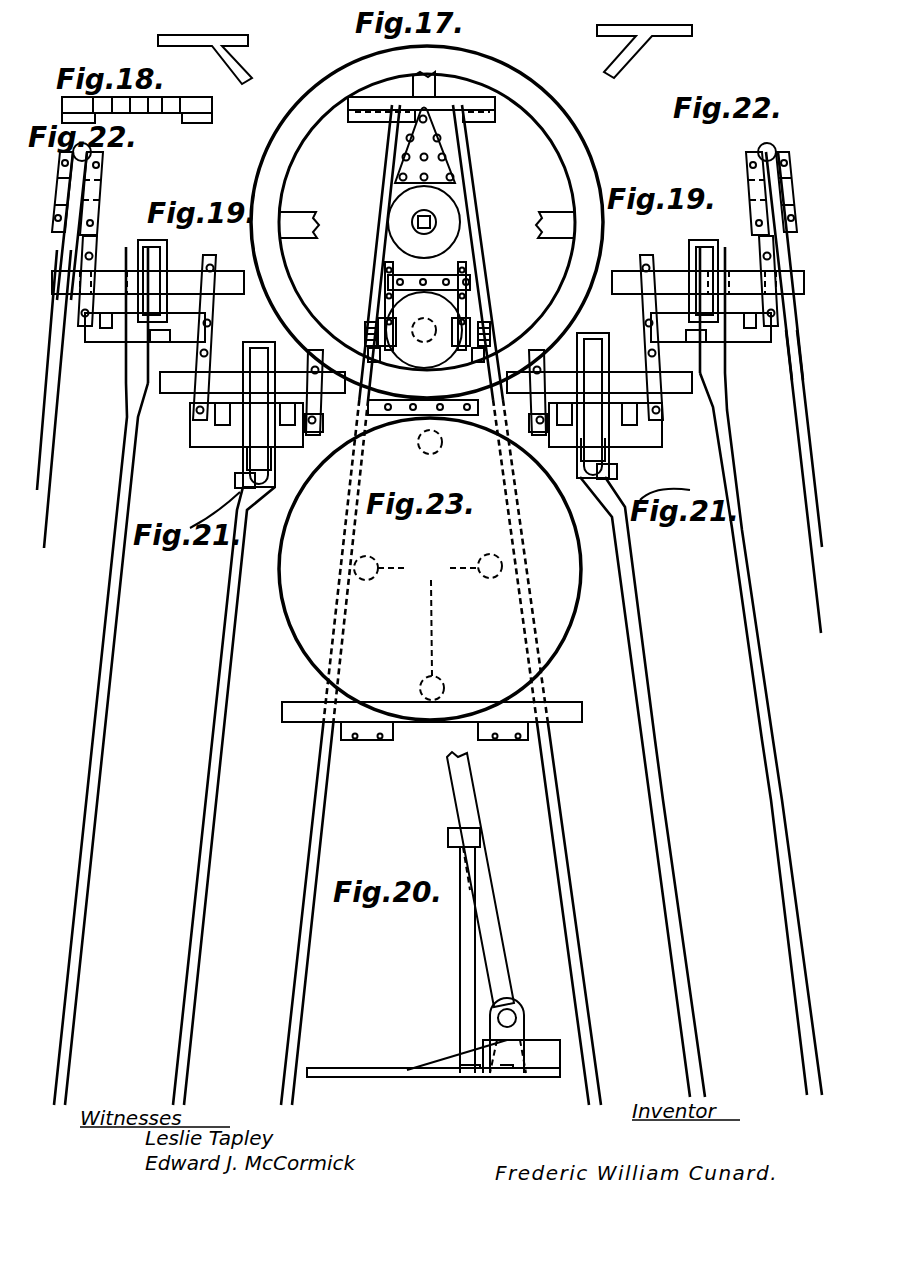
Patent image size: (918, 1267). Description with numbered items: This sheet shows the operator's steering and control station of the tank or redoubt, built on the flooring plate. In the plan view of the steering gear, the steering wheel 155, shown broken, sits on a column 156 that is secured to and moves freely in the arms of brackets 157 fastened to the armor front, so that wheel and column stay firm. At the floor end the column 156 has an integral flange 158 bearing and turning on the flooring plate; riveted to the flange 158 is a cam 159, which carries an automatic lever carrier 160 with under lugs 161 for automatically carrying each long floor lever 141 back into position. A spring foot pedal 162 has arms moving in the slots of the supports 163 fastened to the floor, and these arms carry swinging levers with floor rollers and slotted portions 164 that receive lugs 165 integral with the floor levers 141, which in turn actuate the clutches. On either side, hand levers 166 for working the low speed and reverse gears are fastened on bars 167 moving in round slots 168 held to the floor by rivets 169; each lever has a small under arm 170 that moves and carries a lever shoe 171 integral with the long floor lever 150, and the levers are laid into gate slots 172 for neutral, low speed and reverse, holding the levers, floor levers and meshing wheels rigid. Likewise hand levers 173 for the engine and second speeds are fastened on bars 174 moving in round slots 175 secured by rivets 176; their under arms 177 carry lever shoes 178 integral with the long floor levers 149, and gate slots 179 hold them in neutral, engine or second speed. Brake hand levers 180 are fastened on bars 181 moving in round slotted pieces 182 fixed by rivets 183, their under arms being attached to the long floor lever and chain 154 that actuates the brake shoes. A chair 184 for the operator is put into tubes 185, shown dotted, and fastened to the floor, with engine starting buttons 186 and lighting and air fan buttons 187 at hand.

In FIG. 17, the long floor lever 141 is at (388, 140).
In FIG. 21, the long floor lever 149 is at (205, 830).
In FIG. 21, the long floor lever 150 is at (112, 630).
In FIG. 20, the long floor lever 150 is at (316, 1067).
In FIG. 21, the long floor lever and chain 154 is at (53, 462).
In FIG. 17, the steering wheel 155 is at (290, 121).
In FIG. 17, the column 156 is at (437, 222).
In FIG. 17, the brackets 157 is at (236, 52).
In FIG. 17, the flange 158 is at (444, 197).
In FIG. 17, the cam 159 is at (442, 168).
In FIG. 17, the automatic lever carrier 160 is at (432, 128).
In FIG. 18, the automatic lever carrier 160 is at (203, 104).
In FIG. 18, the under lugs 161 is at (177, 118).
In FIG. 17, the spring foot pedal 162 is at (412, 305).
In FIG. 17, the slotted supports 163 is at (390, 277).
In FIG. 17, the swinging levers with floor rollers and slotted portions 164 is at (362, 327).
In FIG. 17, the lugs 165 is at (364, 350).
In FIG. 19, the hand levers 166 is at (140, 360).
In FIG. 20, the hand levers 166 is at (492, 899).
In FIG. 19, the bars 167 is at (180, 292).
In FIG. 19, the round slots 168 is at (88, 285).
In FIG. 19, the rivets 169 is at (428, 325).
In FIG. 19, the under arm 170 is at (156, 273).
In FIG. 20, the under arm 170 is at (486, 1075).
In FIG. 19, the lever shoe 171 is at (706, 226).
In FIG. 20, the lever shoe 171 is at (480, 1053).
In FIG. 19, the gate slots 172 is at (110, 322).
In FIG. 20, the gate slots 172 is at (480, 836).
In FIG. 21, the hand levers 173 is at (247, 455).
In FIG. 21, the bars 174 is at (217, 383).
In FIG. 21, the round slots 175 is at (313, 388).
In FIG. 21, the rivets 176 is at (671, 400).
In FIG. 21, the under arm 177 is at (448, 401).
In FIG. 21, the lever shoe 178 is at (245, 342).
In FIG. 21, the gate slots 179 is at (205, 437).
In FIG. 22, the hand levers 180 is at (100, 151).
In FIG. 22, the bars 181 is at (92, 194).
In FIG. 22, the round slotted pieces 182 is at (94, 215).
In FIG. 22, the rivets 183 is at (99, 170).
In FIG. 23, the chair 184 is at (280, 541).
In FIG. 23, the tubes 185 is at (428, 572).
In FIG. 23, the engine starting buttons 186 is at (488, 740).
In FIG. 23, the lighting and air fan buttons 187 is at (368, 741).